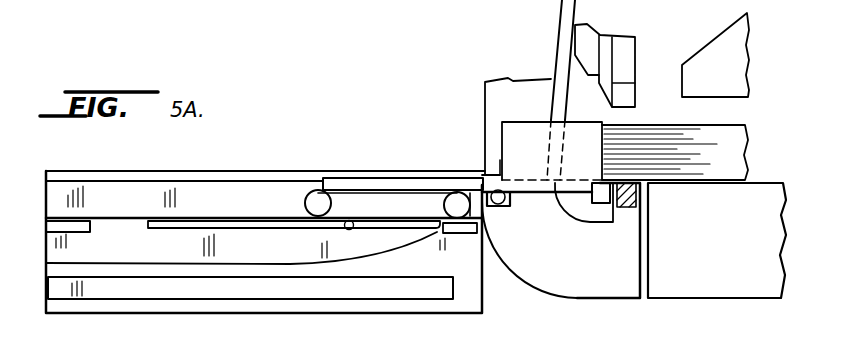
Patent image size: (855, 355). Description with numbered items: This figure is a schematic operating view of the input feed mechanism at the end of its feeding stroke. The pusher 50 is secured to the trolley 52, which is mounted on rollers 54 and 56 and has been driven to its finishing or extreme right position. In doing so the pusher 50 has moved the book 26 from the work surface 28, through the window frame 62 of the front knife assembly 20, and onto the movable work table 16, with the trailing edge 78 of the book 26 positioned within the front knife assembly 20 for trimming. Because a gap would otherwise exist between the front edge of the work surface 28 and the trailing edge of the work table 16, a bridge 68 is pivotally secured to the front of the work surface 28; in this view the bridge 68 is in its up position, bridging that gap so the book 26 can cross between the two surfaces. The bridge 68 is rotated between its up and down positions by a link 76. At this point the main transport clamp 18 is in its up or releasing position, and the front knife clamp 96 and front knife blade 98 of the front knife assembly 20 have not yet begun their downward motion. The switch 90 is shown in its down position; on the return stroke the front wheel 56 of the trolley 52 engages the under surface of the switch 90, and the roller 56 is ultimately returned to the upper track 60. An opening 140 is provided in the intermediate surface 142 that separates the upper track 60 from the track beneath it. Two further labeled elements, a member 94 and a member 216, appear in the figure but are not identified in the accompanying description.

The movable work table 16 is at (734, 245).
The main transport clamp 18 is at (724, 76).
The front knife assembly 20 is at (581, 299).
The book 26 is at (680, 129).
The work surface 28 is at (232, 172).
The pusher 50 is at (537, 105).
The trolley 52 is at (372, 185).
The roller 54 is at (305, 199).
The roller 56 is at (455, 200).
The upper track 60 is at (213, 218).
The window frame 62 is at (538, 272).
The bridge 68 is at (601, 208).
The link 76 is at (562, 22).
The trailing edge 78 is at (603, 151).
The switch 90 is at (390, 229).
The lower plate 94 is at (173, 256).
The front knife clamp 96 is at (632, 47).
The front knife blade 98 is at (603, 33).
The opening 140 is at (142, 213).
The intermediate surface 142 is at (255, 237).
The hatched bumper 216 is at (628, 208).